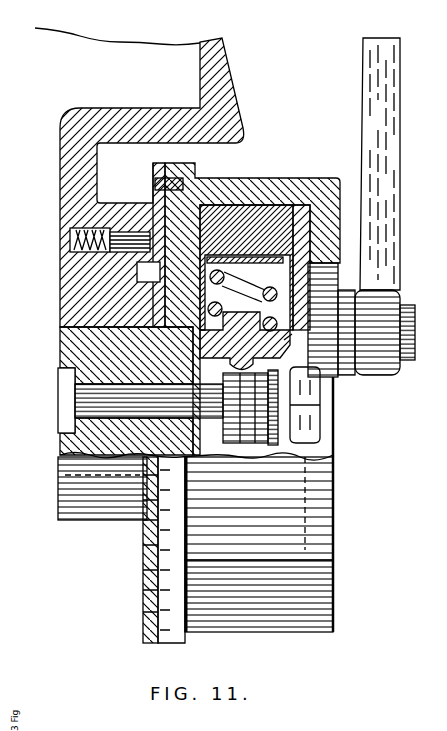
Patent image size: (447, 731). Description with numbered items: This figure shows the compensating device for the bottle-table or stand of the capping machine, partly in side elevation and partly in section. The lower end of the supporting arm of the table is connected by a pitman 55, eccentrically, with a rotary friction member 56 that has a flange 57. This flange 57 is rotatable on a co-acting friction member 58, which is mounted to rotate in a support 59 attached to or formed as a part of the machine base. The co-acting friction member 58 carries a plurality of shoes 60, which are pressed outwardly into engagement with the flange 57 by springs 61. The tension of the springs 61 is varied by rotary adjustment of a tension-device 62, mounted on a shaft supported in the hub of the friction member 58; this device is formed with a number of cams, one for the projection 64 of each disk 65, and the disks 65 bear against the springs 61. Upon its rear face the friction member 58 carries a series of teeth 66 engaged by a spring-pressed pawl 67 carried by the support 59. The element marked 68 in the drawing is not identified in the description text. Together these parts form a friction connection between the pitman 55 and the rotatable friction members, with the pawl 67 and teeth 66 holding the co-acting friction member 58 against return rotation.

The pitman 55 is at (393, 168).
The rotary friction member 56 is at (330, 232).
The flange 57 is at (222, 180).
The co-acting friction member 58 is at (60, 337).
The support 59 is at (68, 279).
The shoes 60 is at (266, 212).
The springs 61 is at (225, 276).
The tension-device 62 is at (268, 362).
The projection 64 is at (232, 362).
The disks 65 is at (288, 338).
The teeth 66 is at (142, 558).
The spring-pressed pawl 67 is at (98, 232).
The shaft bolt 68 is at (76, 398).